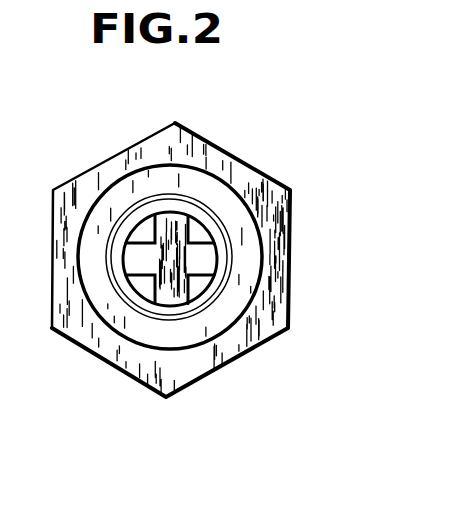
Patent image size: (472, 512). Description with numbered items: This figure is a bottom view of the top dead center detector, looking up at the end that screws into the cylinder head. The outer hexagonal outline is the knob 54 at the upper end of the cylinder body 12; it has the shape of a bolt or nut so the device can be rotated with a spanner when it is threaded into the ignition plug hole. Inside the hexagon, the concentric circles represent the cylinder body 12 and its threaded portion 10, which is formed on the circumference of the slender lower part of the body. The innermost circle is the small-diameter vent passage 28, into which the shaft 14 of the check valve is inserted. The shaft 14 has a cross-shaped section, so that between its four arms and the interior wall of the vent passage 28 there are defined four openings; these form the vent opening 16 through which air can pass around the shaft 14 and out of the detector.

The knob 54 is at (233, 157).
The cylinder body 12 is at (243, 199).
The threaded portion 10 is at (233, 253).
The vent passage 28 is at (205, 286).
The vent opening 16 is at (147, 232).
The shaft 14 is at (172, 268).